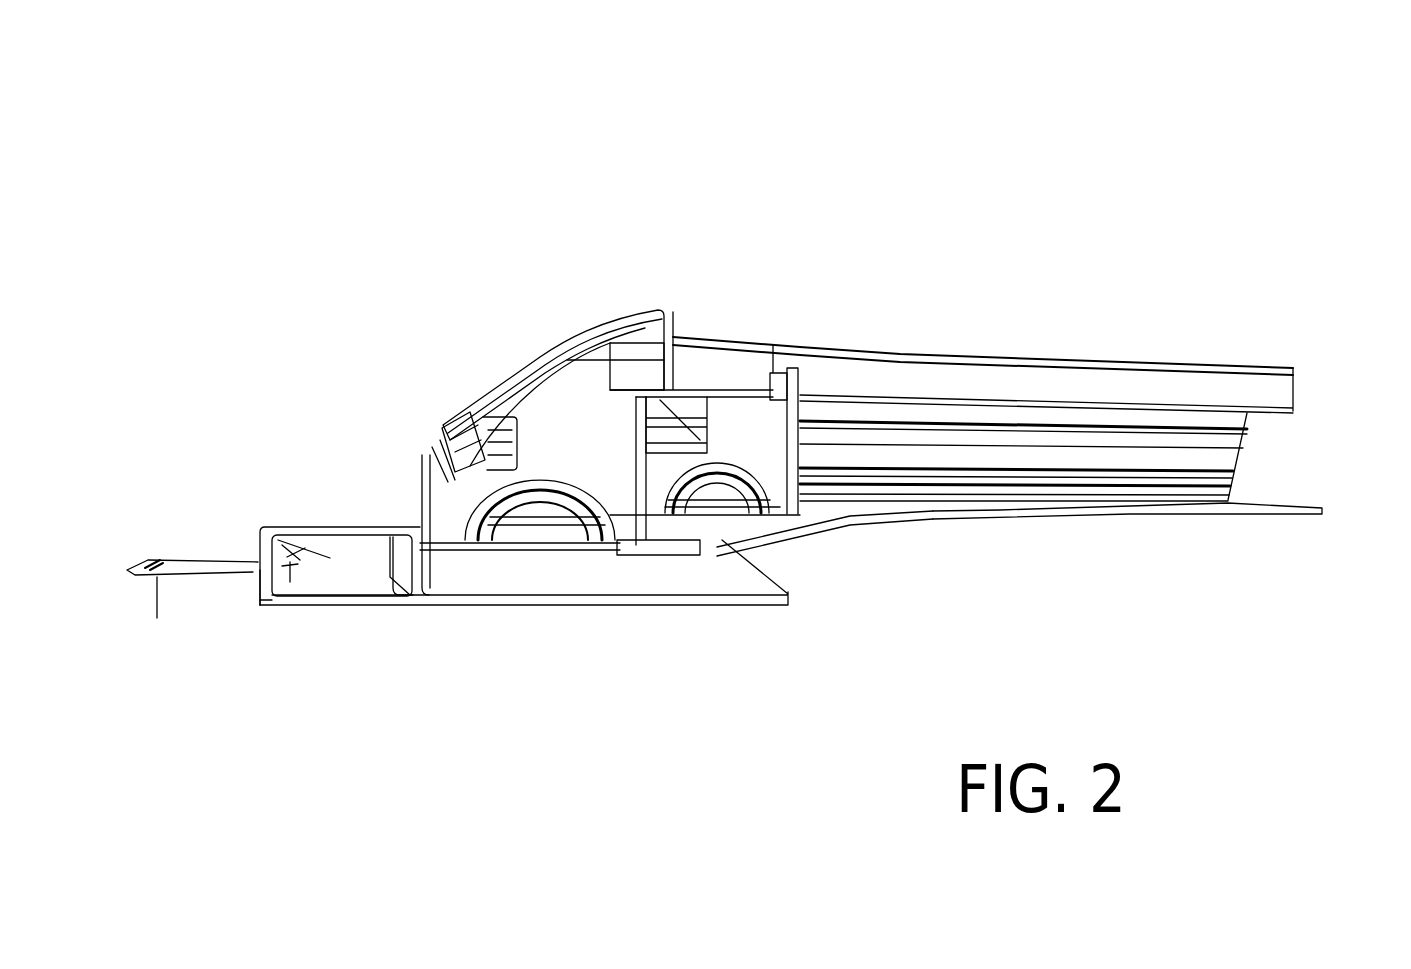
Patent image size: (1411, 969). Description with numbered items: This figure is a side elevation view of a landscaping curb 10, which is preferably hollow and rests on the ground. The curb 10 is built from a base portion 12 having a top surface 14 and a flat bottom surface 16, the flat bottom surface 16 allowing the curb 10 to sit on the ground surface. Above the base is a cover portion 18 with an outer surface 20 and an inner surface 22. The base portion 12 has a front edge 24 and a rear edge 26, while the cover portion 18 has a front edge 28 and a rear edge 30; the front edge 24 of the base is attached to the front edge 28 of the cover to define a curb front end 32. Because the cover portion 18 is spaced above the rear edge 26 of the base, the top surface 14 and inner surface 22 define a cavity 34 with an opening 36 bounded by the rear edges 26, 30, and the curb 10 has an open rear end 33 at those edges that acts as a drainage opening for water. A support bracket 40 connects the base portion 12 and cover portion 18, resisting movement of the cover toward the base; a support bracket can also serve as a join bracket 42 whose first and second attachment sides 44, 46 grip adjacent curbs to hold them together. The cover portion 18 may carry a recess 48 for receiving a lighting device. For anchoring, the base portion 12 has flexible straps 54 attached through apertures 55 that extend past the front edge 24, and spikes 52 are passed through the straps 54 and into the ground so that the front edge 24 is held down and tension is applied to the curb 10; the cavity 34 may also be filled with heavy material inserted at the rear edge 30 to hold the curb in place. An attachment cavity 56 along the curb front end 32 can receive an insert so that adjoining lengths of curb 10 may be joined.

The curb 10 is at (290, 222).
The base portion 12 is at (520, 570).
The top surface 14 is at (453, 573).
The bottom surface 16 is at (472, 587).
The cover portion 18 is at (453, 417).
The outer surface 20 is at (608, 334).
The inner surface 22 is at (1046, 431).
The front edge 24 is at (272, 604).
The rear edge 26 is at (1188, 513).
The front edge 28 is at (258, 528).
The rear edge 30 is at (916, 372).
The curb front end 32 is at (258, 573).
The rear end 33 is at (1190, 387).
The cavity 34 is at (940, 468).
The opening 36 is at (1098, 439).
The support bracket 40 is at (623, 485).
The join bracket 42 is at (773, 475).
The first attachment side 44 is at (773, 370).
The second attachment side 46 is at (798, 370).
The recess 48 is at (452, 447).
The spike 52 is at (157, 603).
The strap 54 is at (145, 560).
The aperture 55 is at (290, 568).
The attachment cavity 56 is at (323, 556).